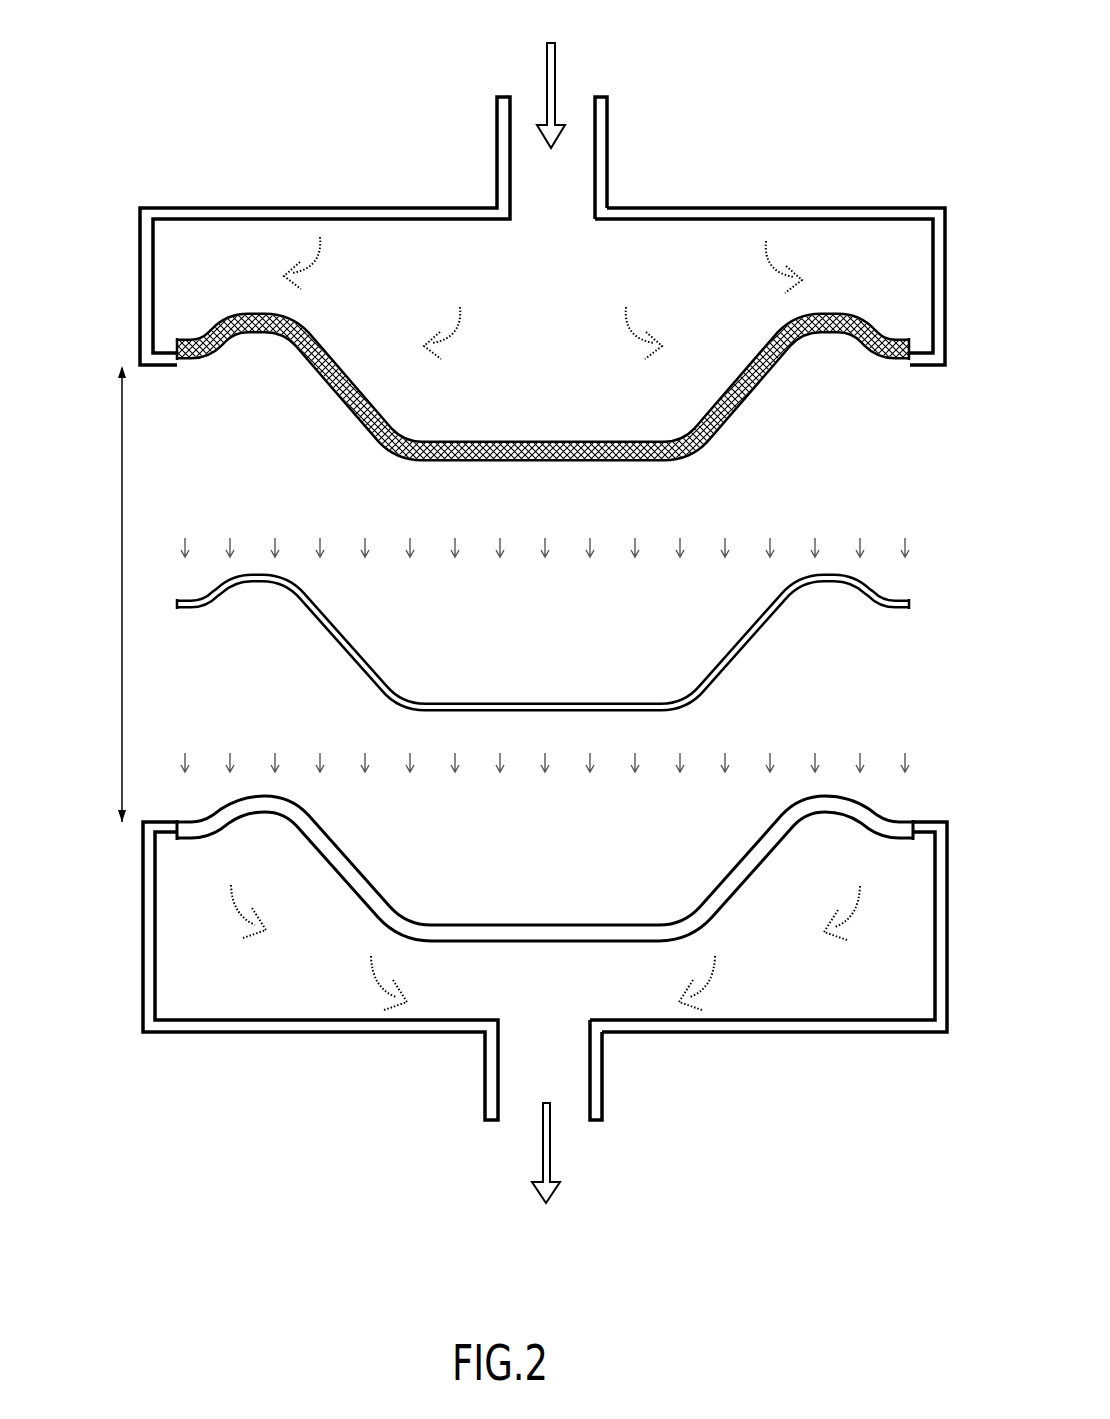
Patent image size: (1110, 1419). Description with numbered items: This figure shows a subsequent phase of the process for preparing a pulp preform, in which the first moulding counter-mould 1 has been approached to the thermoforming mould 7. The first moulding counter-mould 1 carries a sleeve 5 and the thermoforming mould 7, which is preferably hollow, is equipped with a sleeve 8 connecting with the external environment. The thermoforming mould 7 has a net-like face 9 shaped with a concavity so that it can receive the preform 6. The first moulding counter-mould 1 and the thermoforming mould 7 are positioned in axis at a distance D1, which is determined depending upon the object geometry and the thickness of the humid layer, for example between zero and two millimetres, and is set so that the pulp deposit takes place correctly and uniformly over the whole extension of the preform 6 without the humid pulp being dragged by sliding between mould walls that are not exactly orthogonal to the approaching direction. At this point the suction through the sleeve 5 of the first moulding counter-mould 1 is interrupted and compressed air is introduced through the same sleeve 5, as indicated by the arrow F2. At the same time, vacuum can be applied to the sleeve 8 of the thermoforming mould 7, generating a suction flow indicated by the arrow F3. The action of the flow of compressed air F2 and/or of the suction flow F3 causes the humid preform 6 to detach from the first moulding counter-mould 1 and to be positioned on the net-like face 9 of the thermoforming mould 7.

The first moulding counter-mould 1 is at (248, 208).
The sleeve 5 is at (607, 160).
The preform 6 is at (765, 637).
The thermoforming mould 7 is at (163, 1040).
The sleeve 8 is at (602, 1093).
The net-like face 9 is at (397, 923).
The flow of compressed air F2 is at (557, 95).
The suction flow F3 is at (553, 1180).
The distance D1 is at (93, 594).